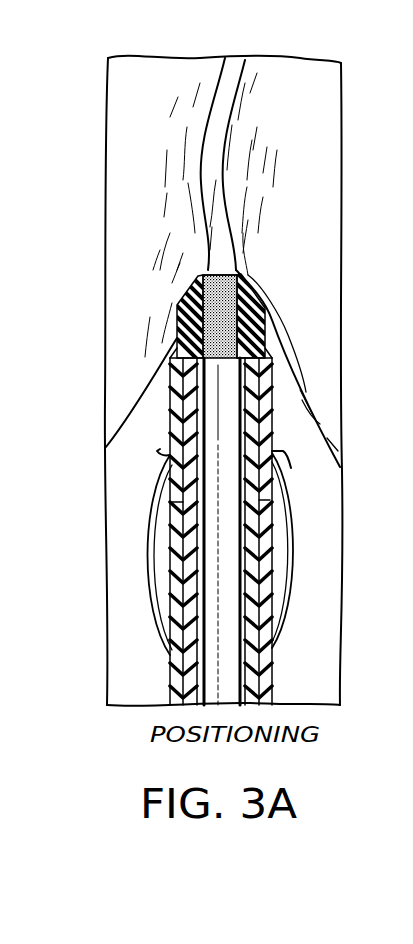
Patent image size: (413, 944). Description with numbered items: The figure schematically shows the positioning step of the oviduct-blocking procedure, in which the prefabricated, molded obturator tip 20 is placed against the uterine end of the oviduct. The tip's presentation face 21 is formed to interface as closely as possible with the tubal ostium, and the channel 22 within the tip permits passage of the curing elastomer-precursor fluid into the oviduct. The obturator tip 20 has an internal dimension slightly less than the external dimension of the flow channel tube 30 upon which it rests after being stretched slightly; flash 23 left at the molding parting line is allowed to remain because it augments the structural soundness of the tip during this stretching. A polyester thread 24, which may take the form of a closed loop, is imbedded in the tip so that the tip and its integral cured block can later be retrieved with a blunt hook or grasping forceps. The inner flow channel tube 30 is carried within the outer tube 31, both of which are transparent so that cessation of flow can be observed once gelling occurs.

The obturator tip 20 is at (262, 338).
The presentation face 21 is at (262, 295).
The channel 22 is at (236, 270).
The flash 23 is at (283, 455).
The polyester thread 24 is at (150, 547).
The flow channel tube 30 is at (250, 433).
The outer tube 31 is at (275, 650).